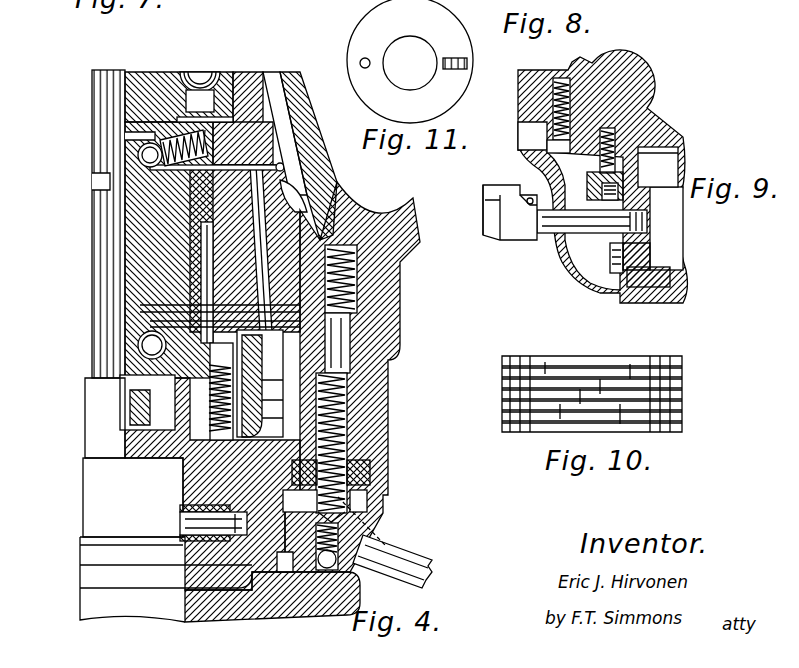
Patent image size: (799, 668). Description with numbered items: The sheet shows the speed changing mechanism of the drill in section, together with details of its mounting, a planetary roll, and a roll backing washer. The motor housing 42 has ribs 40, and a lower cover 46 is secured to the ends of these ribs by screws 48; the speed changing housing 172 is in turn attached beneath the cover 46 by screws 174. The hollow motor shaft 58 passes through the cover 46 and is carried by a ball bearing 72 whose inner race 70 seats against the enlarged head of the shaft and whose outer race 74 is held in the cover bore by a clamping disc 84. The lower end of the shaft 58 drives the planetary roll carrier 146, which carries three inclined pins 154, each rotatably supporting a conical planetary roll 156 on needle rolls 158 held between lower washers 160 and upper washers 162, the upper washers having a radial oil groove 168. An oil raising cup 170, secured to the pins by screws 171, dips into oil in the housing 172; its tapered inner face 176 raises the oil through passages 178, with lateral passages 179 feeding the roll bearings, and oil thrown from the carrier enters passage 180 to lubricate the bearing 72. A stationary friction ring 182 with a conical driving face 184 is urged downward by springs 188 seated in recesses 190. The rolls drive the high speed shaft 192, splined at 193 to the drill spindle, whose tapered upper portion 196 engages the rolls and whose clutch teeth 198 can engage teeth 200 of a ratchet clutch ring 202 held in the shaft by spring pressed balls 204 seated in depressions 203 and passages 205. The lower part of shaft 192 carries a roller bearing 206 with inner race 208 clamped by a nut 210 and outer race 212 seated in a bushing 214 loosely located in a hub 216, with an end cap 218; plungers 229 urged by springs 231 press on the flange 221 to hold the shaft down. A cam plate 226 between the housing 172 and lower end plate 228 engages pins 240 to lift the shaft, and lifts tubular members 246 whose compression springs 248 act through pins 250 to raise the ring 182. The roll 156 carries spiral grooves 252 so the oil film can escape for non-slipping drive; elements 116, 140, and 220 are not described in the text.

In FIG. 9, the ribs 40 is at (560, 77).
In FIG. 9, the motor housing 42 is at (528, 100).
In FIG. 4, the lower motor housing member or cover 46 is at (408, 203).
In FIG. 9, the lower motor housing member or cover 46 is at (597, 92).
In FIG. 9, the screws 48 is at (540, 150).
In FIG. 4, the motor shaft 58 is at (143, 77).
In FIG. 4, the inner race 70 is at (170, 80).
In FIG. 4, the anti-friction or ball bearing 72 is at (196, 70).
In FIG. 4, the outer race 74 is at (222, 95).
In FIG. 4, the clamping disc 84 is at (256, 110).
In FIG. 4, the plunger shaft 116 is at (130, 238).
In FIG. 9, the bowl wall 140 is at (560, 273).
In FIG. 4, the planetary roll carrier 146 is at (335, 190).
In FIG. 4, the roll supporting pins or stud shafts 154 is at (292, 92).
In FIG. 4, the conical planetary wheel or roll 156 is at (124, 290).
In FIG. 10, the conical planetary wheel or roll 156 is at (550, 357).
In FIG. 4, the needle rolls 158 is at (124, 250).
In FIG. 4, the washers 160 is at (138, 338).
In FIG. 4, the washers 162 is at (418, 236).
In FIG. 11, the washers 162 is at (368, 102).
In FIG. 11, the radial oil groove 168 is at (466, 63).
In FIG. 4, the annular ring or oil raising cup 170 is at (342, 391).
In FIG. 4, the screws 171 is at (124, 342).
In FIG. 4, the speed changing housing 172 is at (392, 368).
In FIG. 9, the speed changing housing 172 is at (640, 175).
In FIG. 9, the screws 174 is at (603, 195).
In FIG. 4, the inner face 176 is at (345, 417).
In FIG. 4, the passages 178 is at (355, 335).
In FIG. 4, the lateral passages 179 is at (290, 142).
In FIG. 4, the upwardly extending passage 180 is at (313, 176).
In FIG. 4, the stationary planetary friction ring 182 is at (403, 306).
In FIG. 4, the conical tapered inner driving face 184 is at (402, 291).
In FIG. 4, the springs 188 is at (403, 256).
In FIG. 4, the recesses 190 is at (402, 267).
In FIG. 4, the high speed or driven shaft 192 is at (124, 360).
In FIG. 4, the axially splined connection 193 is at (92, 368).
In FIG. 4, the conical or tapered upper portion 196 is at (124, 215).
In FIG. 4, the clutch teeth 198 is at (115, 186).
In FIG. 4, the complementary clutch teeth 200 is at (92, 180).
In FIG. 4, the ratchet clutch ring 202 is at (137, 155).
In FIG. 4, the peripheral depressions 203 is at (200, 133).
In FIG. 4, the spring pressed balls 204 is at (124, 134).
In FIG. 4, the passages 205 is at (165, 140).
In FIG. 4, the anti-friction or roller bearing 206 is at (124, 402).
In FIG. 4, the inner race 208 is at (124, 416).
In FIG. 4, the nut 210 is at (113, 430).
In FIG. 4, the outer race 212 is at (110, 422).
In FIG. 4, the bushing 214 is at (200, 468).
In FIG. 4, the hub 216 is at (392, 378).
In FIG. 4, the end cap 218 is at (128, 458).
In FIG. 4, the block 220 is at (195, 518).
In FIG. 4, the outstanding flange 221 is at (166, 579).
In FIG. 4, the cam plate 226 is at (380, 530).
In FIG. 4, the lower end plate 228 is at (306, 603).
In FIG. 4, the spring pressed plungers 229 is at (205, 488).
In FIG. 4, the springs 231 is at (165, 470).
In FIG. 4, the pins 240 is at (200, 536).
In FIG. 4, the vertical tubular members 246 is at (345, 497).
In FIG. 4, the compression springs 248 is at (355, 434).
In FIG. 4, the pins 250 is at (372, 349).
In FIG. 10, the grooves 252 is at (684, 380).